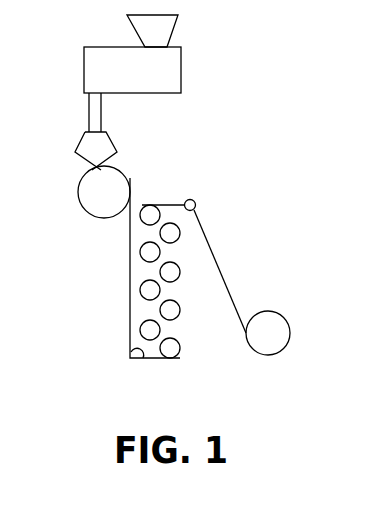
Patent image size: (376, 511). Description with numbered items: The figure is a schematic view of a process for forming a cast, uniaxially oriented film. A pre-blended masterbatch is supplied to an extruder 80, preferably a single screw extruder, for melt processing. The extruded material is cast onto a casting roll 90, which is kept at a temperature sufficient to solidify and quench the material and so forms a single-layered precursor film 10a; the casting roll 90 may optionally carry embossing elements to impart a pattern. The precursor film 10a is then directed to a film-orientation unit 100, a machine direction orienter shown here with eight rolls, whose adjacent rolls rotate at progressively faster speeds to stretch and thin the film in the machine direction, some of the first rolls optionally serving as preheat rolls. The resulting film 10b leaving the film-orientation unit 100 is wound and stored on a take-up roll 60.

The extruder 80 is at (167, 73).
The casting roll 90 is at (95, 197).
The precursor film 10a is at (131, 211).
The resulting film 10b is at (227, 280).
The take-up roll 60 is at (280, 334).
The film-orientation unit 100 is at (140, 274).